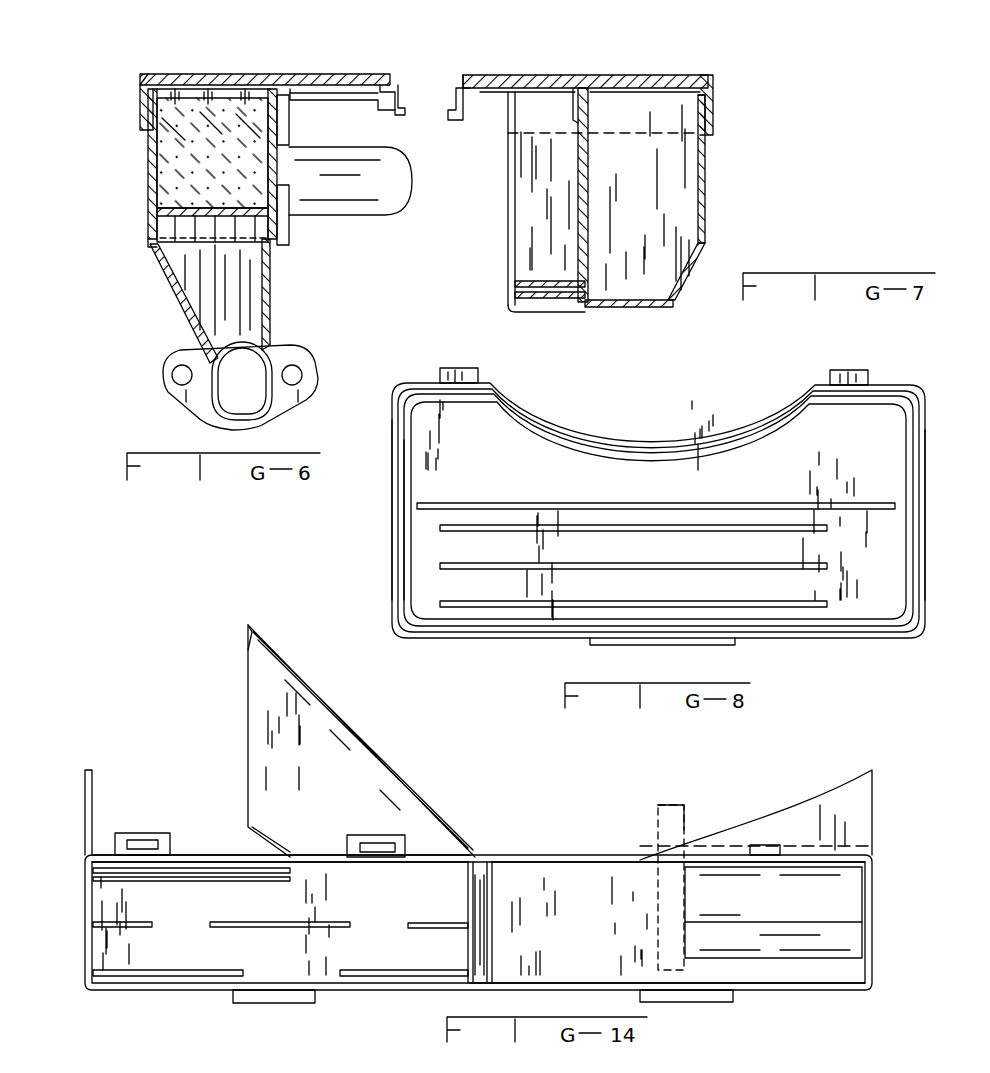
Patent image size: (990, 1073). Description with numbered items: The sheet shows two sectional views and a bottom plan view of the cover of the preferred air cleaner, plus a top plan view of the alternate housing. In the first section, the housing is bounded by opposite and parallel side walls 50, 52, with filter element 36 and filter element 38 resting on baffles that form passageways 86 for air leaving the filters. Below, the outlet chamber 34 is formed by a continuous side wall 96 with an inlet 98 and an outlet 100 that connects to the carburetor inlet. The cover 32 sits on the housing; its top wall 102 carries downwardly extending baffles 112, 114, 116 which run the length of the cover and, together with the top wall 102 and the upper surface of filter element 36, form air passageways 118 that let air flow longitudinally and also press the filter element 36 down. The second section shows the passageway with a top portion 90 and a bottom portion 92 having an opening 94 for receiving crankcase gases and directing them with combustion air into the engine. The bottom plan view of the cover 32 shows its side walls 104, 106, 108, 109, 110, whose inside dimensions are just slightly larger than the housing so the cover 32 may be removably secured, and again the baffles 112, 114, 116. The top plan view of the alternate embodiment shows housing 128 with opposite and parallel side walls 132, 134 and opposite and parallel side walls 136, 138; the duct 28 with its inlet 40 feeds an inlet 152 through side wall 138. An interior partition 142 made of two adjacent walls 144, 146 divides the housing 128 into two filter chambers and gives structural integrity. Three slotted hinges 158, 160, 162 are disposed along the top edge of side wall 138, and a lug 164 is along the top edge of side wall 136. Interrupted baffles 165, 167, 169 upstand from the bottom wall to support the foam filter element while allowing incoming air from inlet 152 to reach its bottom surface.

In FIG. 14, the duct 28 is at (300, 688).
In FIG. 6, the cover 32 is at (368, 84).
In FIG. 7, the cover 32 is at (690, 78).
In FIG. 8, the cover 32 is at (868, 404).
In FIG. 6, the outlet chamber 34 is at (258, 362).
In FIG. 6, the filter element 36 is at (212, 153).
In FIG. 6, the filter element 38 is at (150, 215).
In FIG. 14, the inlet 40 is at (246, 650).
In FIG. 6, the side wall 50 is at (150, 148).
In FIG. 7, the side wall 50 is at (706, 178).
In FIG. 6, the side wall 52 is at (283, 225).
In FIG. 7, the side wall 52 is at (578, 192).
In FIG. 6, the passageways 86 is at (212, 216).
In FIG. 7, the top portion 90 is at (708, 110).
In FIG. 7, the bottom portion 92 is at (696, 262).
In FIG. 7, the opening 94 is at (588, 296).
In FIG. 6, the continuous side wall 96 is at (178, 312).
In FIG. 6, the inlet 98 is at (272, 282).
In FIG. 6, the outlet 100 is at (225, 410).
In FIG. 8, the top wall 102 is at (412, 543).
In FIG. 8, the side wall 104 is at (390, 500).
In FIG. 8, the side wall 106 is at (922, 462).
In FIG. 6, the side wall 108 is at (145, 80).
In FIG. 7, the side wall 108 is at (710, 80).
In FIG. 8, the side wall 108 is at (820, 640).
In FIG. 6, the side wall 109 is at (290, 98).
In FIG. 7, the side wall 109 is at (572, 95).
In FIG. 8, the side wall 109 is at (580, 502).
In FIG. 6, the side wall 110 is at (390, 82).
In FIG. 7, the side wall 110 is at (468, 80).
In FIG. 8, the side wall 110 is at (768, 408).
In FIG. 6, the baffle 112 is at (182, 128).
In FIG. 8, the baffle 112 is at (600, 600).
In FIG. 6, the baffle 114 is at (222, 134).
In FIG. 8, the baffle 114 is at (592, 562).
In FIG. 6, the baffle 116 is at (258, 128).
In FIG. 8, the baffle 116 is at (618, 532).
In FIG. 6, the air passageways 118 is at (245, 88).
In FIG. 14, the housing 128 is at (520, 856).
In FIG. 14, the side wall 132 is at (80, 950).
In FIG. 14, the side wall 134 is at (878, 925).
In FIG. 14, the side wall 136 is at (590, 996).
In FIG. 14, the side wall 138 is at (556, 858).
In FIG. 14, the interior partition 142 is at (478, 868).
In FIG. 14, the wall 144 is at (468, 904).
In FIG. 14, the wall 146 is at (492, 914).
In FIG. 14, the inlet 152 is at (298, 856).
In FIG. 14, the slotted hinge 158 is at (128, 836).
In FIG. 14, the slotted hinge 160 is at (362, 838).
In FIG. 14, the slotted hinge 162 is at (768, 840).
In FIG. 14, the lug 164 is at (300, 1004).
In FIG. 14, the interrupted baffle 165 is at (168, 970).
In FIG. 14, the interrupted baffle 167 is at (254, 922).
In FIG. 14, the interrupted baffle 169 is at (122, 880).